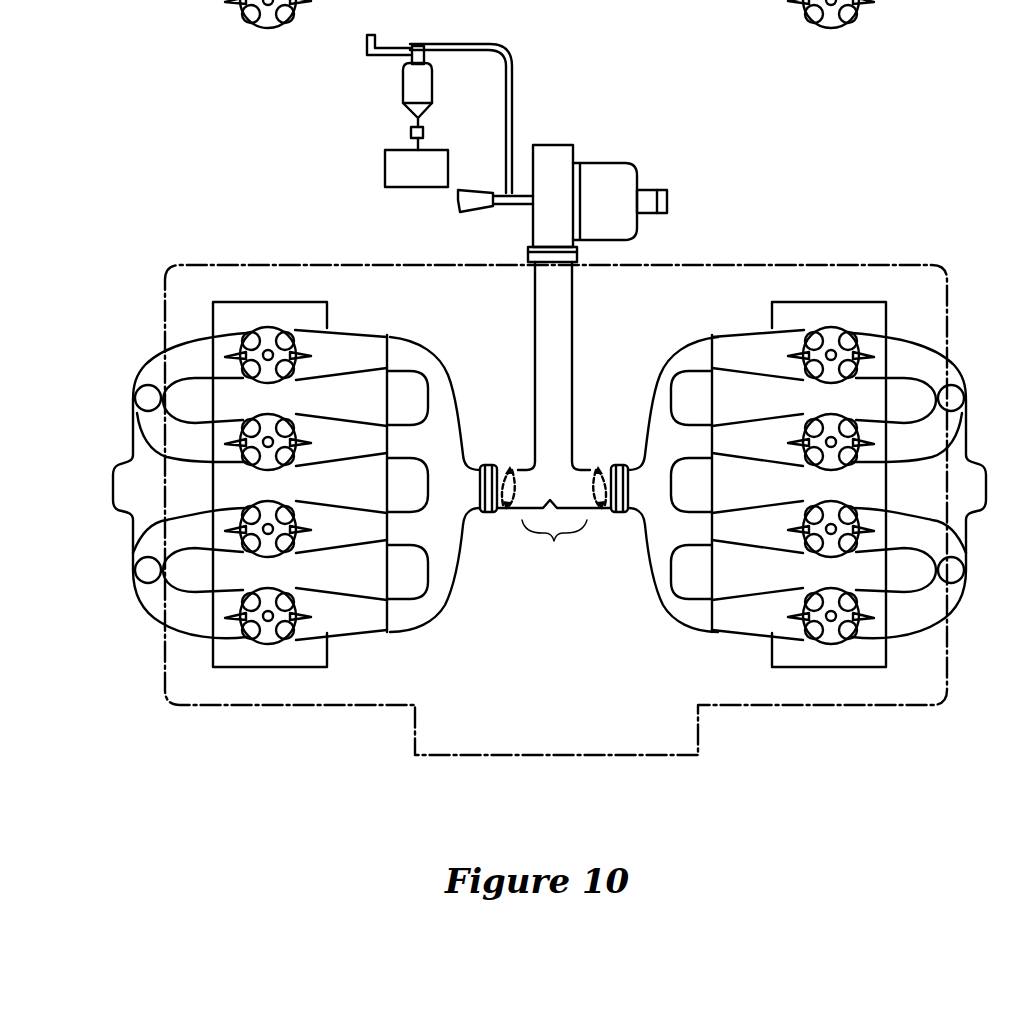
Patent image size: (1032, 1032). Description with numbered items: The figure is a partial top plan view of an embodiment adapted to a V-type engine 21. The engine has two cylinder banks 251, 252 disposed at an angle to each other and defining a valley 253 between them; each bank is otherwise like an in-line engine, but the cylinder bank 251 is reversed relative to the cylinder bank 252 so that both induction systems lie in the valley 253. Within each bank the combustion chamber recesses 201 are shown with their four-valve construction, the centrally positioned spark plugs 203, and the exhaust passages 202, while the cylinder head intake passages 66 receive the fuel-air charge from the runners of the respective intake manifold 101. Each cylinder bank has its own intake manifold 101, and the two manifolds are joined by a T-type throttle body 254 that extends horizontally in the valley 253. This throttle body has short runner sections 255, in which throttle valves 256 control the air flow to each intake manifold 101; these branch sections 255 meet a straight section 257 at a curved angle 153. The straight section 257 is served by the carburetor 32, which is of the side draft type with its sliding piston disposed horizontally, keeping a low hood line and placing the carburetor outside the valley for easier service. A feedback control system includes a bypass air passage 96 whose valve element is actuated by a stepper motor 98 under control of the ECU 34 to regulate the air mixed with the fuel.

The engine 21 is at (683, 263).
The carburetor 32 is at (624, 147).
The ECU 34 is at (384, 166).
The cylinder head intake passages 66 is at (338, 428).
The bypass air passage 96 is at (512, 82).
The stepper motor 98 is at (403, 88).
The intake manifold 101 is at (443, 607).
The angle 153 is at (554, 542).
The combustion chamber recesses 201 is at (270, 327).
The exhaust passages 202 is at (192, 360).
The spark plugs 203 is at (278, 342).
The cylinder bank 251 is at (303, 667).
The cylinder bank 252 is at (853, 668).
The valley 253 is at (582, 632).
The T-type throttle body 254 is at (575, 366).
The short runner sections 255 is at (505, 466).
The throttle valves 256 is at (517, 512).
The straight section 257 is at (535, 332).